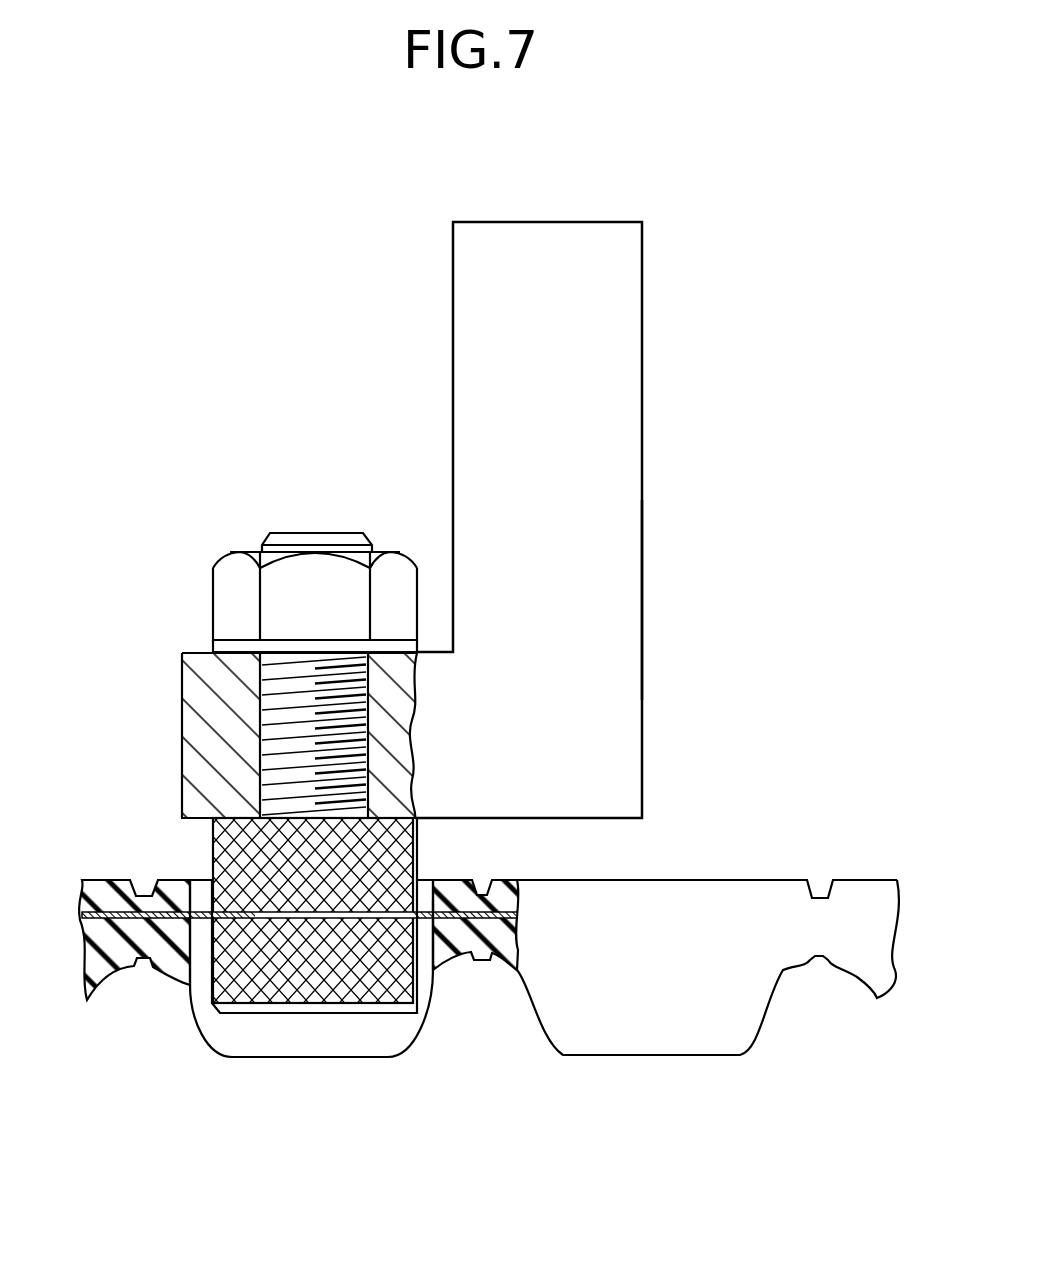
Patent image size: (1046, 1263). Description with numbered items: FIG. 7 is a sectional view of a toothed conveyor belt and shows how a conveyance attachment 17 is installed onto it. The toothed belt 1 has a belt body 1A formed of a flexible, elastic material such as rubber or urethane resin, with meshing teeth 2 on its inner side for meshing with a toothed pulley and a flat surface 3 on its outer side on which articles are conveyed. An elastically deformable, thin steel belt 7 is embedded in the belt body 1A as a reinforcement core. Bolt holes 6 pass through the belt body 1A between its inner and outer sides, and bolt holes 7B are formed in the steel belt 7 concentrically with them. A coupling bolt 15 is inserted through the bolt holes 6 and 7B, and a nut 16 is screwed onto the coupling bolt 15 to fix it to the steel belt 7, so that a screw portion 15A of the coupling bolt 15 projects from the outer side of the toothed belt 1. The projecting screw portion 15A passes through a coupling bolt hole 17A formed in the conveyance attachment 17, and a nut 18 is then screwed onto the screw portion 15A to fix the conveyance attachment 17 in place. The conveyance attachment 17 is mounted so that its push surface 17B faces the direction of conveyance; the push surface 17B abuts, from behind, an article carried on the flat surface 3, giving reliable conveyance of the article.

The toothed belt 1 is at (160, 1020).
The belt body 1A is at (757, 900).
The meshing teeth 2 is at (328, 1058).
The flat surface 3 is at (687, 883).
The bolt holes 6 is at (431, 978).
The steel belt 7 is at (507, 963).
The bolt holes 7B is at (275, 907).
The coupling bolt 15 is at (265, 987).
The screw portion 15A is at (278, 712).
The nut 16 is at (238, 843).
The conveyance attachment 17 is at (630, 367).
The coupling bolt hole 17A is at (362, 712).
The push surface 17B is at (642, 572).
The nut 18 is at (228, 570).